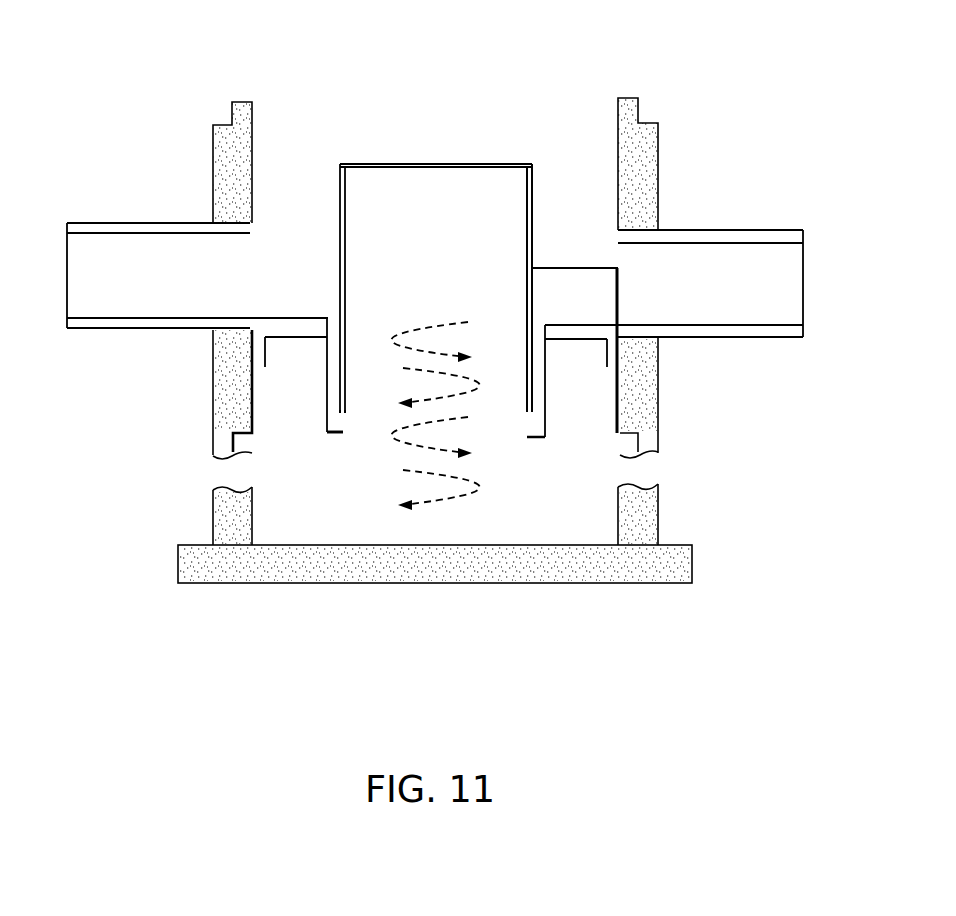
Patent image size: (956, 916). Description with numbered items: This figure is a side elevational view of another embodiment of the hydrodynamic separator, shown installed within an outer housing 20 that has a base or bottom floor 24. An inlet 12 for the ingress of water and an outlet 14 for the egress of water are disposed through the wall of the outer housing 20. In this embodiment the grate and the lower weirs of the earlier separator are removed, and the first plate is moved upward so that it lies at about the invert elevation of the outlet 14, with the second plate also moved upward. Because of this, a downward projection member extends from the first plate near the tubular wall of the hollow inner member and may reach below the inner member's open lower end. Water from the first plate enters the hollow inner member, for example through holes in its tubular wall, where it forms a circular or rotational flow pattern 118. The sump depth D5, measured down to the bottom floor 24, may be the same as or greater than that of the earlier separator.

The inlet 12 is at (127, 223).
The outlet 14 is at (712, 228).
The outer housing 20 is at (223, 410).
The base or bottom floor 24 is at (543, 545).
The rotational water flow path 118 is at (417, 518).
The sump depth D5 is at (813, 545).